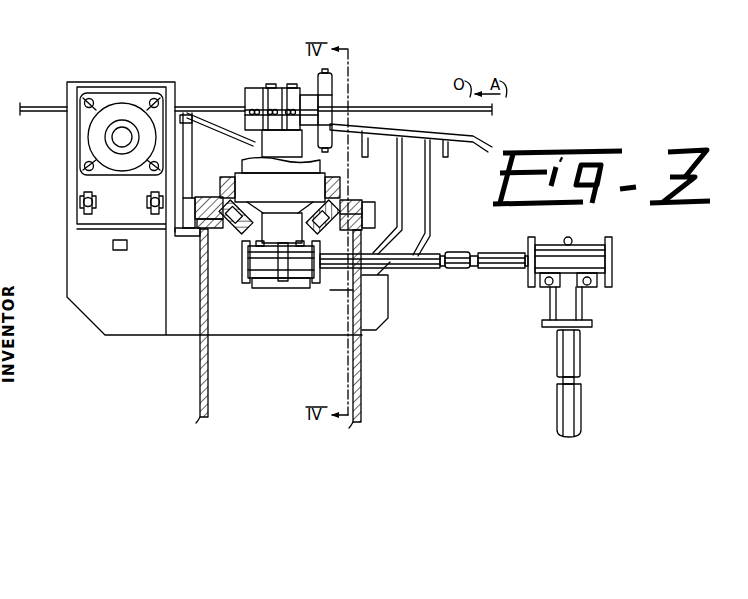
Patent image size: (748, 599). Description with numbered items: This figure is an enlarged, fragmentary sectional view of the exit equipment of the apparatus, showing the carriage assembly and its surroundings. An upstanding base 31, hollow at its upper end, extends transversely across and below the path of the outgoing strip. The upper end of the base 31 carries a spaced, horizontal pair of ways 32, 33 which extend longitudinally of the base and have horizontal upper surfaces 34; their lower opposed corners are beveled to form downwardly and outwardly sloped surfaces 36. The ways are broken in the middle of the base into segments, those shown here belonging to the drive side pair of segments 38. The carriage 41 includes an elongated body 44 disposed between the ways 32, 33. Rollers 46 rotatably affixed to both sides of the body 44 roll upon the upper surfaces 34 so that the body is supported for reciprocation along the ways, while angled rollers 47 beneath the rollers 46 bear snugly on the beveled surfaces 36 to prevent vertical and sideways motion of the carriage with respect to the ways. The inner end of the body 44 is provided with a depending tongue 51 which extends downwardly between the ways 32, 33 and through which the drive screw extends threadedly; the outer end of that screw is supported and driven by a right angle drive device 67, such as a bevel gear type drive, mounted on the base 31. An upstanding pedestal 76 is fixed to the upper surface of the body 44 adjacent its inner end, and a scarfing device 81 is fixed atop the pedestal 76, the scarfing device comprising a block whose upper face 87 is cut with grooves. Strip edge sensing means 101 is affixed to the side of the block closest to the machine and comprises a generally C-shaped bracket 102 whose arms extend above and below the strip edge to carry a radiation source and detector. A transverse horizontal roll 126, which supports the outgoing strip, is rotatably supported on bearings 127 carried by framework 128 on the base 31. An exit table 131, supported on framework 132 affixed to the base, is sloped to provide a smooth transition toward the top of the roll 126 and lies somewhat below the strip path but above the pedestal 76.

The upstanding base 31 is at (361, 372).
The way 32 is at (203, 232).
The way 33 is at (370, 208).
The horizontal upper surfaces 34 is at (366, 190).
The beveled surfaces 36 is at (241, 224).
The drive side pair of segments 38 is at (373, 222).
The carriage 41 is at (232, 81).
The elongated body 44 is at (280, 193).
The rollers 46 is at (340, 192).
The angled rollers 47 is at (223, 196).
The depending tongue 51 is at (282, 228).
The right angle drive device 67 is at (298, 272).
The pedestal 76 is at (281, 130).
The scarfing device 81 is at (272, 84).
The upper face 87 is at (287, 93).
The strip edge sensing means 101 is at (334, 77).
The C-shaped bracket 102 is at (326, 103).
The transverse horizontal roll 126 is at (117, 134).
The bearings 127 is at (97, 147).
The framework 128 is at (93, 310).
The exit table 131 is at (400, 125).
The framework 132 is at (380, 300).